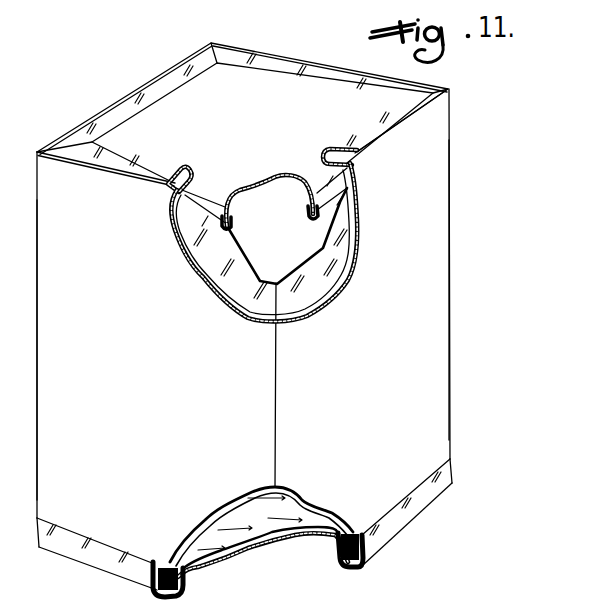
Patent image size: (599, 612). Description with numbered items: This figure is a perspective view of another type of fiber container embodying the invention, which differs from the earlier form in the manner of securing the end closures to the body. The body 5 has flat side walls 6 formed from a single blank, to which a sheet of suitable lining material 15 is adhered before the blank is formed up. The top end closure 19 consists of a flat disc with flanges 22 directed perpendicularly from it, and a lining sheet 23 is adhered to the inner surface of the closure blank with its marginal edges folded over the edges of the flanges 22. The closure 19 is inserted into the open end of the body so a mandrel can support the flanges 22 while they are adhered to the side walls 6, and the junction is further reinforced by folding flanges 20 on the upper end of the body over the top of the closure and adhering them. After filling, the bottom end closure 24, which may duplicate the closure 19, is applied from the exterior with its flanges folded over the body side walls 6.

The body of a container 5 is at (468, 295).
The side walls 6 is at (153, 379).
The lining material 15 is at (262, 280).
The top end closure 19 is at (149, 110).
The flanges 20 is at (181, 172).
The flanges 22 is at (234, 220).
The lining sheet 23 is at (291, 187).
The bottom end closure 24 is at (263, 554).